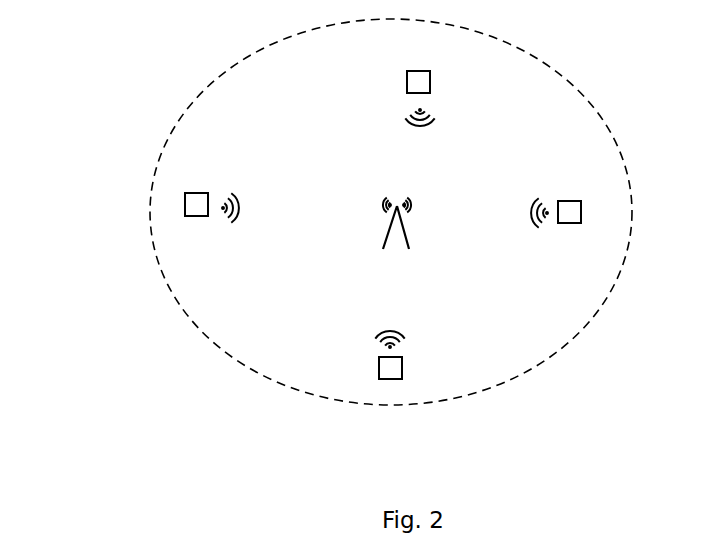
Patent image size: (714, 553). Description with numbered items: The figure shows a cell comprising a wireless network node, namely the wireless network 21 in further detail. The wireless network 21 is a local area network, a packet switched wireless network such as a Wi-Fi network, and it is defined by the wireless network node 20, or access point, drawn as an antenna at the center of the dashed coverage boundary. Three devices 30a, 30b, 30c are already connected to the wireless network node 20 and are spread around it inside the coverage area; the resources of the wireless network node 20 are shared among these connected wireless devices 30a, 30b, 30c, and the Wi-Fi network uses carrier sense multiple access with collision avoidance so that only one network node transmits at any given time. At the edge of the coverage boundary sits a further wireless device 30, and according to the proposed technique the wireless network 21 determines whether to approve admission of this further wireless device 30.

The wireless network node 20 is at (389, 232).
The wireless network 21 is at (600, 114).
The further wireless device 30 is at (185, 201).
The wireless device 30a is at (390, 379).
The wireless device 30b is at (570, 223).
The wireless device 30c is at (407, 83).